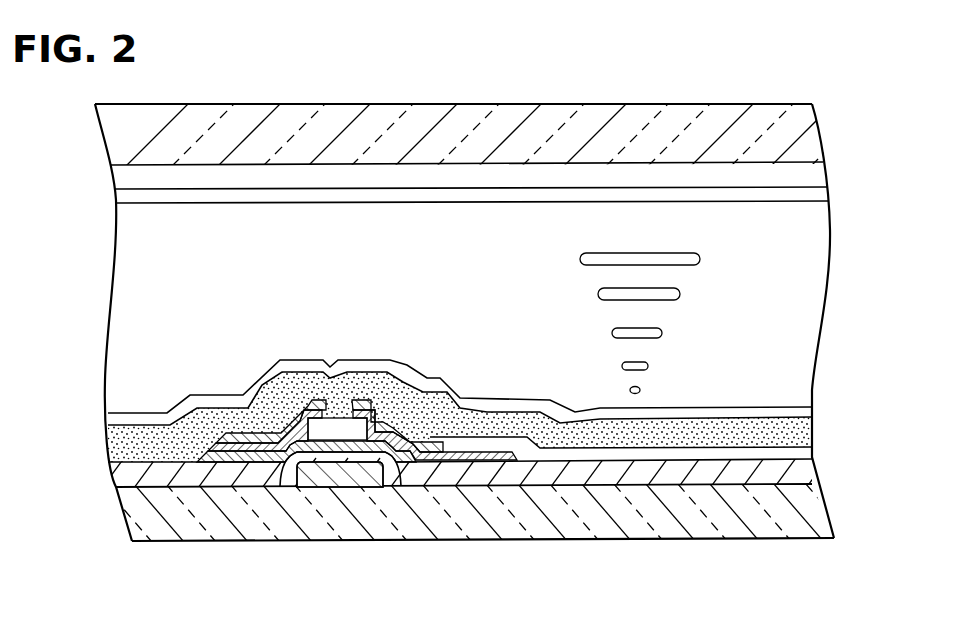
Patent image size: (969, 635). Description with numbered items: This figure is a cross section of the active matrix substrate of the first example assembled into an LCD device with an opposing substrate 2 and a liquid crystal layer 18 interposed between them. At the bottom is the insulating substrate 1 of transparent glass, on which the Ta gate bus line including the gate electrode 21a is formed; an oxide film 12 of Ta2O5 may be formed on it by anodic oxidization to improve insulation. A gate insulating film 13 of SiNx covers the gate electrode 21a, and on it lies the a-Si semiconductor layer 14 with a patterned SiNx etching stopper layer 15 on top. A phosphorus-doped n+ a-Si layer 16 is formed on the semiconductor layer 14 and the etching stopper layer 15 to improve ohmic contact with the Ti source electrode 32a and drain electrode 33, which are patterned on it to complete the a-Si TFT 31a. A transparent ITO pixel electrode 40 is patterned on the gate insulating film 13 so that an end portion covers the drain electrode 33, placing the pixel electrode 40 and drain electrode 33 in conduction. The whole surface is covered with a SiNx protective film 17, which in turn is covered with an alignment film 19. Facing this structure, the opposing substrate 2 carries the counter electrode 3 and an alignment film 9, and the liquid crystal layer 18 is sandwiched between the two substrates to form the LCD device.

The insulating substrate 1 is at (813, 512).
The opposing substrate 2 is at (803, 119).
The counter electrode 3 is at (812, 170).
The alignment film 9 is at (800, 195).
The oxide film 12 is at (290, 483).
The gate insulating film 13 is at (123, 478).
The semiconductor layer 14 is at (233, 458).
The etching stopper layer 15 is at (352, 420).
The n+ a-Si layer 16 is at (225, 455).
The protective film 17 is at (122, 443).
The liquid crystal layer 18 is at (808, 316).
The alignment film 19 is at (128, 417).
The gate electrode 21a is at (393, 520).
The a-Si TFT 31a is at (330, 352).
The source electrode 32a is at (270, 438).
The drain electrode 33 is at (455, 440).
The pixel electrode 40 is at (797, 452).